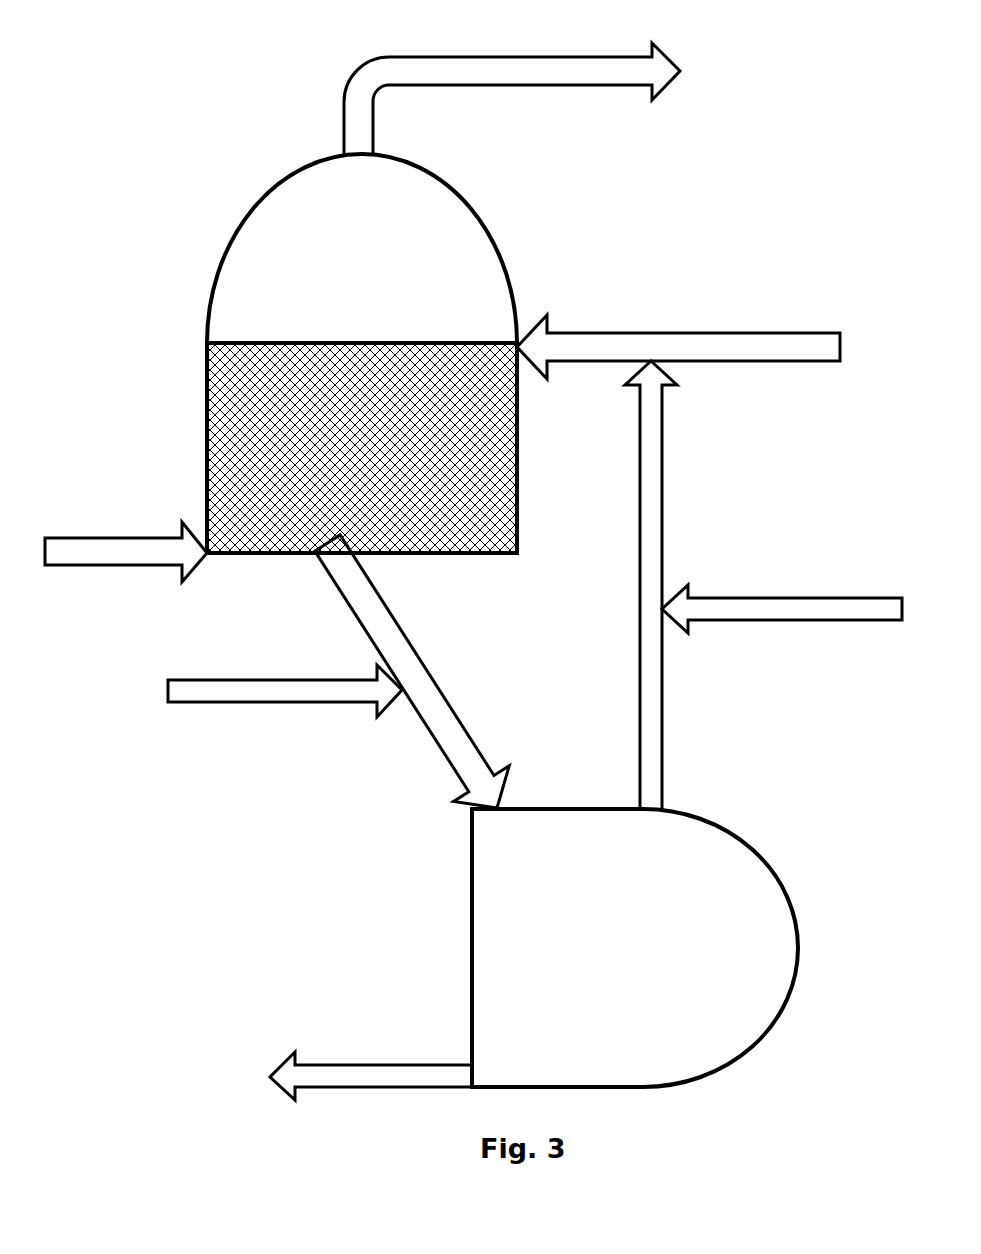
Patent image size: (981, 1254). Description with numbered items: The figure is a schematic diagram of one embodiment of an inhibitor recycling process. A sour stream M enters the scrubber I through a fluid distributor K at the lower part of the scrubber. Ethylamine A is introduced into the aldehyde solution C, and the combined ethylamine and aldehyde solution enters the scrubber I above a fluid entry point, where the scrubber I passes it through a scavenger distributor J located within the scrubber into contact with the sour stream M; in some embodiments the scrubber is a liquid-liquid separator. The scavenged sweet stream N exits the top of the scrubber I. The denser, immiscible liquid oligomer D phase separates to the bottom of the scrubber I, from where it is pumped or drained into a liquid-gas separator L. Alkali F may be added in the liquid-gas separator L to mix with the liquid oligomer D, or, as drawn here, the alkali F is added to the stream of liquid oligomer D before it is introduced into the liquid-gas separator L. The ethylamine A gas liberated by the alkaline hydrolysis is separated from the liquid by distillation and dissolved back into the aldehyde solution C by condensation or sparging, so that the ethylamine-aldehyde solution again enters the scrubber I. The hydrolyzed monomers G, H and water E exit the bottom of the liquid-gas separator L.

The scrubber I is at (224, 256).
The scavenger distributor J is at (205, 403).
The fluid distributor K is at (455, 558).
The scavenged sweet stream N is at (534, 48).
The aldehyde solution C is at (802, 322).
The ethylamine A is at (663, 463).
The sour stream M is at (104, 536).
The liquid oligomer D is at (353, 626).
The alkali F is at (198, 707).
The liquid-gas separator L is at (800, 937).
The water E is at (371, 1059).
The hydrolyzed monomer G is at (371, 1059).
The hydrolyzed monomer H is at (306, 1052).